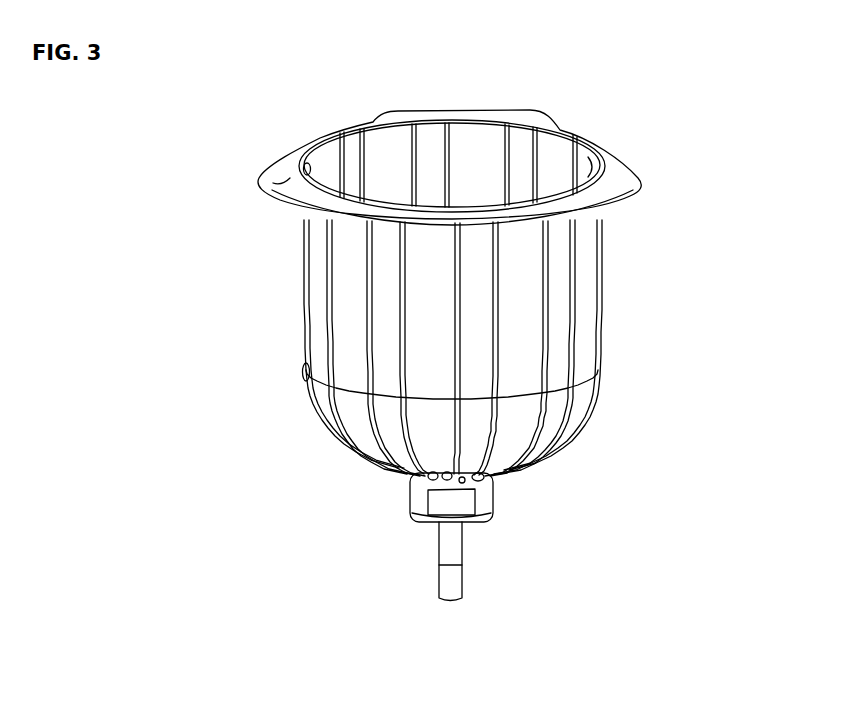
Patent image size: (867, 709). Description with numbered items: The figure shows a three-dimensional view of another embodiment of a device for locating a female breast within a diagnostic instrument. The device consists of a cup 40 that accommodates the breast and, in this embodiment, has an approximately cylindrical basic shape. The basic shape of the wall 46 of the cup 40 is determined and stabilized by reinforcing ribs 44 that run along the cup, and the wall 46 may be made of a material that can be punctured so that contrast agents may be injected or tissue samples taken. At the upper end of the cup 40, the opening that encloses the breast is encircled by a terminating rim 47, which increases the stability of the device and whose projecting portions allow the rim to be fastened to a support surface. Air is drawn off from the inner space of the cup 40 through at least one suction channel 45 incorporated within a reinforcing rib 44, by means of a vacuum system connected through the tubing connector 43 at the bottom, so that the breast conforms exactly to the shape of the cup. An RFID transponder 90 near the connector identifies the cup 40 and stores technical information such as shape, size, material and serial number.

The cup 40 is at (697, 242).
The tubing connector 43 is at (452, 582).
The reinforcing rib 44 is at (558, 343).
The suction channel 45 is at (520, 150).
The wall 46 is at (353, 348).
The terminating rim 47 is at (262, 173).
The RFID transponder 90 is at (453, 510).